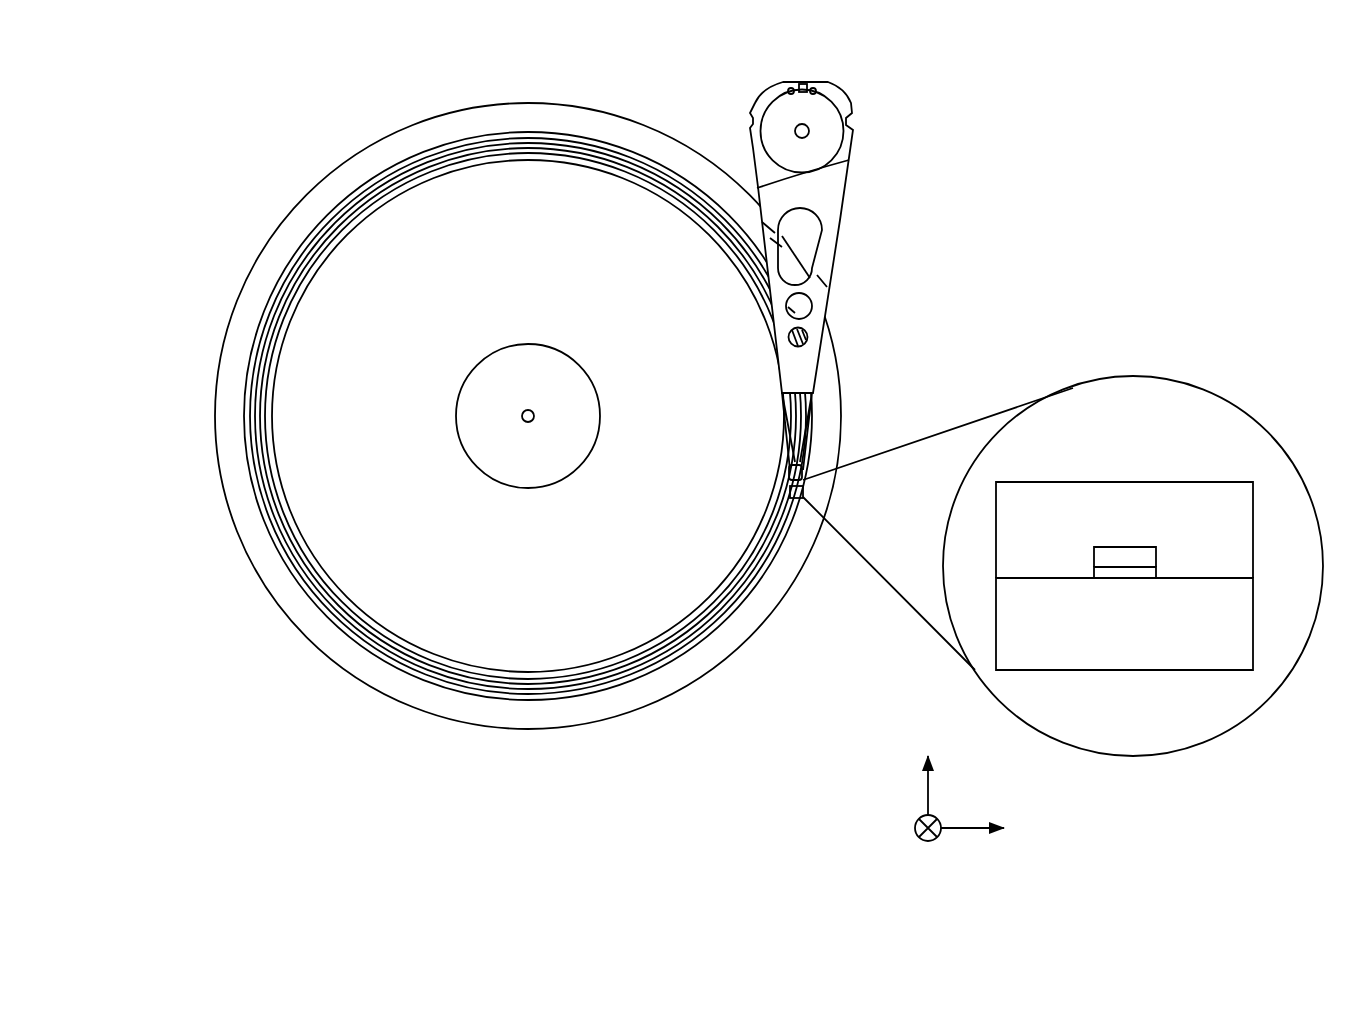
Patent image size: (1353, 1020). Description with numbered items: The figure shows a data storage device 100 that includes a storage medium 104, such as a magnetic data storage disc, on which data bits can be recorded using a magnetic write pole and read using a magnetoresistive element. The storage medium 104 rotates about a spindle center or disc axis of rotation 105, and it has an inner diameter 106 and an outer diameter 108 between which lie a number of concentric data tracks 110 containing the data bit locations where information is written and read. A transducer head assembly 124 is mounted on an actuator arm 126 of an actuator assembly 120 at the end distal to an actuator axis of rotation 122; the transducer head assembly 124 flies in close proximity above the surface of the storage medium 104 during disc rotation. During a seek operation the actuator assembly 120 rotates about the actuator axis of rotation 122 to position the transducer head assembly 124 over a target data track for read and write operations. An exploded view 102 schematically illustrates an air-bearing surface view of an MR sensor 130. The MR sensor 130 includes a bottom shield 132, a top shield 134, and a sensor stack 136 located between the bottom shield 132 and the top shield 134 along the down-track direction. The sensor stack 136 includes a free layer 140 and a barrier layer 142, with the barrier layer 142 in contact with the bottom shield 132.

The data storage device 100 is at (280, 78).
The exploded view 102 is at (1127, 376).
The storage medium 104 is at (605, 113).
The disc axis of rotation 105 is at (522, 412).
The inner diameter 106 is at (497, 350).
The outer diameter 108 is at (412, 150).
The concentric data tracks 110 is at (703, 632).
The actuator assembly 120 is at (844, 354).
The actuator axis of rotation 122 is at (808, 128).
The transducer head assembly 124 is at (803, 498).
The actuator arm 126 is at (783, 418).
The MR sensor 130 is at (1203, 459).
The bottom shield 132 is at (1186, 647).
The top shield 134 is at (1031, 502).
The sensor stack 136 is at (1015, 432).
The free layer 140 is at (1086, 551).
The barrier layer 142 is at (1086, 571).